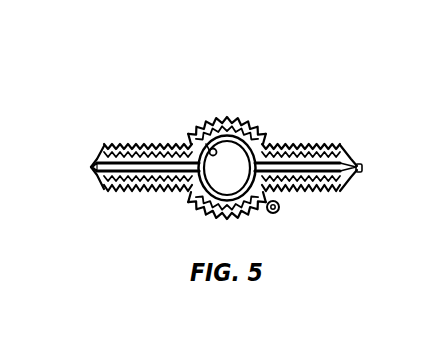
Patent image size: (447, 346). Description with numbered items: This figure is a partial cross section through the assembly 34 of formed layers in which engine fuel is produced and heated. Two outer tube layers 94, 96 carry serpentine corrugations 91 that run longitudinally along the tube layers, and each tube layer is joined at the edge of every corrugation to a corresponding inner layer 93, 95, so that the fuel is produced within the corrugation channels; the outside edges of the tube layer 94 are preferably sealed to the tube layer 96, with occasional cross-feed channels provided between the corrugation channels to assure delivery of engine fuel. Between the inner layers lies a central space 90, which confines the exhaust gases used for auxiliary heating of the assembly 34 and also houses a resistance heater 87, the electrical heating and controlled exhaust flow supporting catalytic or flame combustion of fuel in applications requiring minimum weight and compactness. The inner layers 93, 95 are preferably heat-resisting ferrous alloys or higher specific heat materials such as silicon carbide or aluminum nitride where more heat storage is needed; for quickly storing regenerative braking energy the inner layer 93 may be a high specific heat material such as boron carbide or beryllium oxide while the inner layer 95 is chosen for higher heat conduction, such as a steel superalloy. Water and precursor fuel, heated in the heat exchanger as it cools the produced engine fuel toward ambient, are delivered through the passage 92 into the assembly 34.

The assembly 34 is at (239, 77).
The resistance heater 87 is at (207, 146).
The central space 90 is at (198, 206).
The serpentine corrugations 91 is at (143, 143).
The delivery passage 92 is at (278, 214).
The inner layer 93 is at (106, 154).
The tube layer 94 is at (322, 144).
The inner layer 95 is at (103, 170).
The tube layer 96 is at (332, 189).